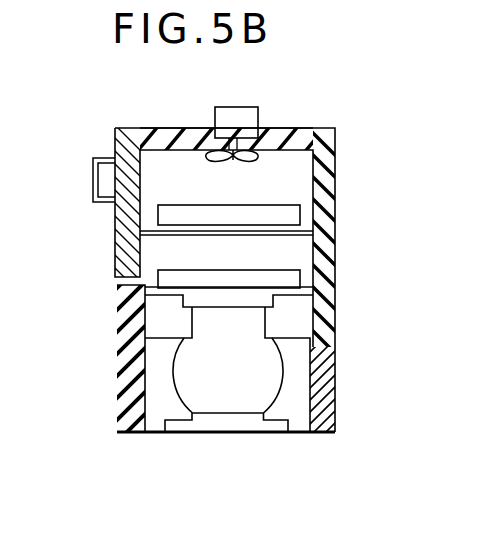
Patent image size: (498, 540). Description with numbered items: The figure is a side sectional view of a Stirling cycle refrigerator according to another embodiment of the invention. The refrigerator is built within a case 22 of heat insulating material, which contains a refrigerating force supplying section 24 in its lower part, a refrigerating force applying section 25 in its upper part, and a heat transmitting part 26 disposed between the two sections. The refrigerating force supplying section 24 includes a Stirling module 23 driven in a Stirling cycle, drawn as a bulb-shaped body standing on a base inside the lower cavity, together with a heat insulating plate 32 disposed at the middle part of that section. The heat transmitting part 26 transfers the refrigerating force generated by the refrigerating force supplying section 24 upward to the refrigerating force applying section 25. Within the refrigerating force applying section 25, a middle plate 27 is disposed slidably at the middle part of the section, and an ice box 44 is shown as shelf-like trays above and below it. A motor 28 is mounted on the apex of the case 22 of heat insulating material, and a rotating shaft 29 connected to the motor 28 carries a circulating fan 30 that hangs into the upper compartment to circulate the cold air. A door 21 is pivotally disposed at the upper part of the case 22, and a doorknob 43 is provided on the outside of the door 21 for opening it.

The door 21 is at (116, 232).
The case of heat insulating material 22 is at (315, 148).
The Stirling module 23 is at (192, 373).
The refrigerating force supplying section 24 is at (334, 369).
The refrigerating force applying section 25 is at (300, 150).
The heat transmitting part 26 is at (297, 297).
The middle plate 27 is at (300, 250).
The motor 28 is at (233, 125).
The rotating shaft 29 is at (288, 163).
The circulating fan 30 is at (213, 150).
The heat insulating plate 32 is at (160, 338).
The doorknob 43 is at (93, 186).
The ice box 44 is at (295, 210).